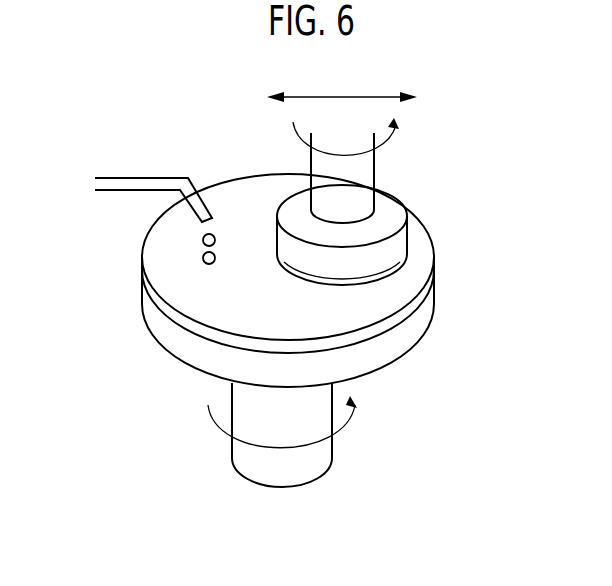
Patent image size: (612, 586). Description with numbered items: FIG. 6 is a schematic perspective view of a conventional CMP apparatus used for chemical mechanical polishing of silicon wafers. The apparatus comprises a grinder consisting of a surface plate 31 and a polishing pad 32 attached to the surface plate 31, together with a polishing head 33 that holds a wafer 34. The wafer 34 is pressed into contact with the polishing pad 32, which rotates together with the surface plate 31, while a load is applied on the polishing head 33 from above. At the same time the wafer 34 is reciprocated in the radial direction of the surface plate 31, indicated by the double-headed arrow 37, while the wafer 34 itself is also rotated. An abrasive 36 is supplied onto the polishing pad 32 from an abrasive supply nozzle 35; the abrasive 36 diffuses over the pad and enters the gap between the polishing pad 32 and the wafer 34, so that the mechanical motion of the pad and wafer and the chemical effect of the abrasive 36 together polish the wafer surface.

The surface plate 31 is at (413, 343).
The polishing pad 32 is at (410, 313).
The polishing head 33 is at (362, 171).
The wafer 34 is at (400, 264).
The abrasive supply nozzle 35 is at (132, 179).
The abrasive 36 is at (197, 260).
The reciprocating motion arrow 37 is at (372, 90).